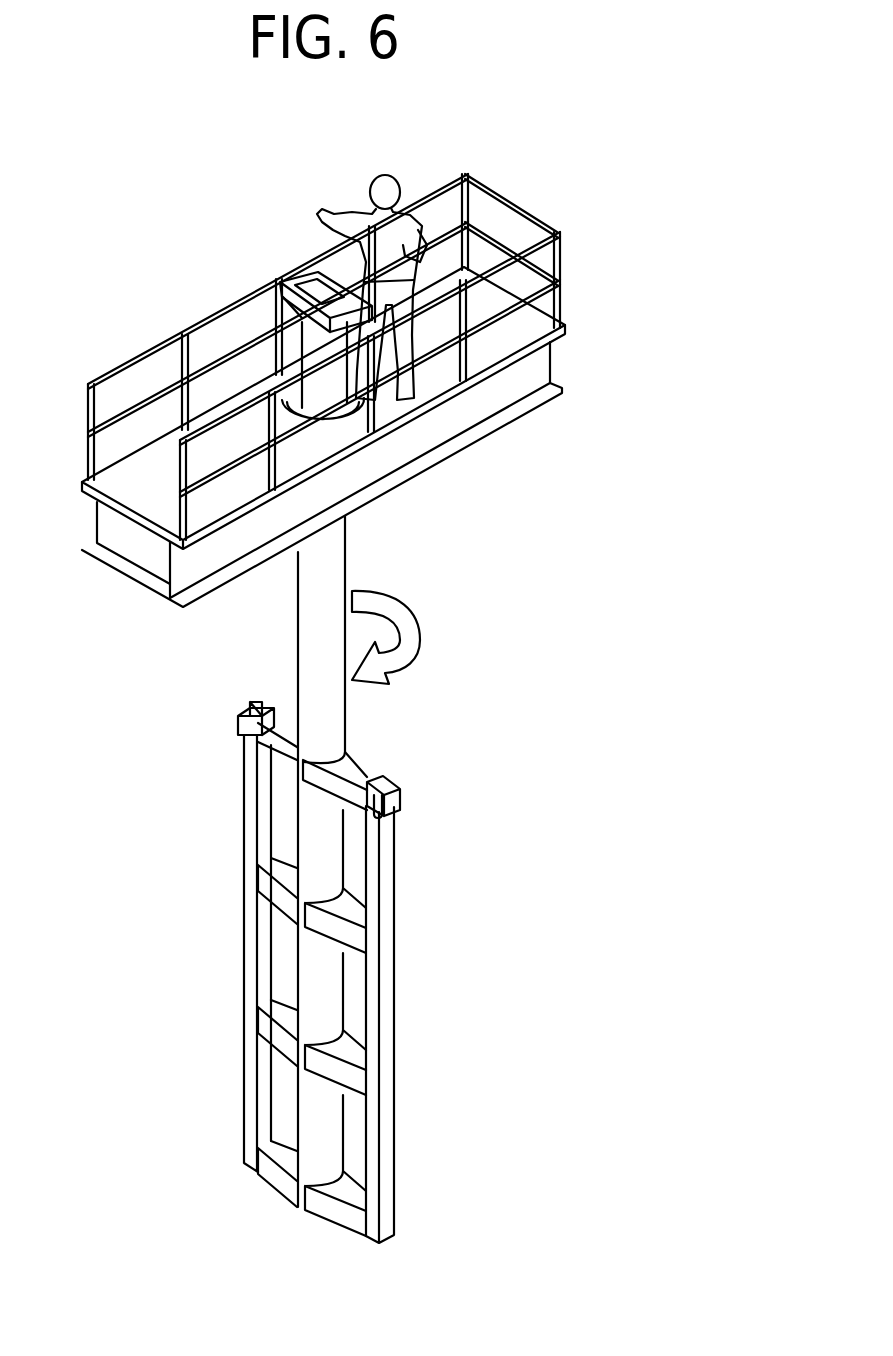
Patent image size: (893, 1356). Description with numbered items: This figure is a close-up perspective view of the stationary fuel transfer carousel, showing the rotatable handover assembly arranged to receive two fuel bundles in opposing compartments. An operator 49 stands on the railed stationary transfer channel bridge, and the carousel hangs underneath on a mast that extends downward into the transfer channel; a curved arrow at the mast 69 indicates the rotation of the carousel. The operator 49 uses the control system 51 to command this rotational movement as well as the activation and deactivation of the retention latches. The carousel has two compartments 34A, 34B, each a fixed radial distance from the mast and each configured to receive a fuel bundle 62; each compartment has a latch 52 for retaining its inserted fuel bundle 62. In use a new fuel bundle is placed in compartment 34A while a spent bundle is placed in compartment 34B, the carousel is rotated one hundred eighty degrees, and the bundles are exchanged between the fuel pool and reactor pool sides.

The operator 49 is at (468, 176).
The control system 51 is at (283, 281).
The rotatable mast 69 is at (374, 550).
The fuel bundle 62 is at (242, 698).
The latch 52 is at (412, 790).
The compartment 34A is at (243, 938).
The compartment 34B is at (396, 940).